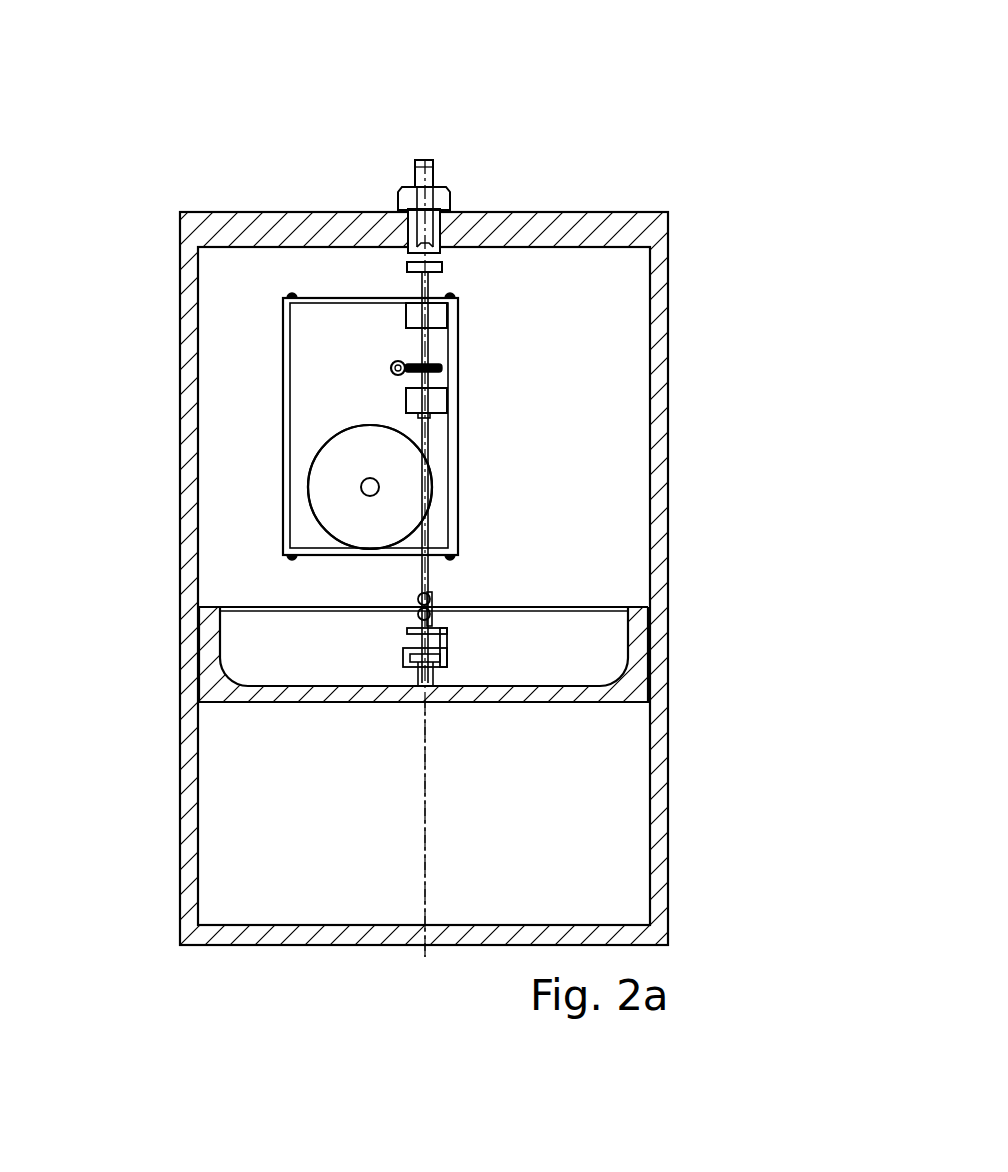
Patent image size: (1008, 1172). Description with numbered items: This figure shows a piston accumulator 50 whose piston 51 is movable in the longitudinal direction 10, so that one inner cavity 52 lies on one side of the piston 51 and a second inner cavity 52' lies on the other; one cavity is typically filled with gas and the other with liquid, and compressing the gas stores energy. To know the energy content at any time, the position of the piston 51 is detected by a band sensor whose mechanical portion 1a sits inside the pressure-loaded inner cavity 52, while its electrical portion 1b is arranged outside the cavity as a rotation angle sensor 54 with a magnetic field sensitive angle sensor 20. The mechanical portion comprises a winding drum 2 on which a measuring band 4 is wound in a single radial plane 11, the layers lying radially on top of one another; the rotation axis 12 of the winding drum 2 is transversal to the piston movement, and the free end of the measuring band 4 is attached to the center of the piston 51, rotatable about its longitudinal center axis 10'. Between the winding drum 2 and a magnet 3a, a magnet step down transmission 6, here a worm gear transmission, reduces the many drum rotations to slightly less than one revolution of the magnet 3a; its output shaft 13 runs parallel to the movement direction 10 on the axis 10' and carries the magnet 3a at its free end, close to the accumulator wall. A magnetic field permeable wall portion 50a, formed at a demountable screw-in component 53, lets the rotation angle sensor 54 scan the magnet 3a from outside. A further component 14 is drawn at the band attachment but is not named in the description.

The piston accumulator 50 is at (668, 222).
The magnetic field permeable wall portion 50a is at (445, 247).
The piston 51 is at (220, 650).
The inner cavity 52 is at (555, 447).
The inner cavity 52' is at (290, 800).
The screw-in component 53 is at (404, 189).
The rotation angle sensor 54 is at (436, 182).
The mechanical portion 1a is at (474, 388).
The electrical portion 1b is at (492, 190).
The magnet 3a is at (443, 271).
The angle sensor 20 is at (410, 248).
The output shaft 13 is at (428, 347).
The magnet step down transmission 6 is at (390, 356).
The winding drum 2 is at (370, 487).
The radial plane 11 is at (370, 487).
The rotation axis 12 is at (364, 496).
The measuring band 4 is at (430, 577).
The clamp 14 is at (449, 655).
The longitudinal direction 10 is at (512, 608).
The longitudinal center axis 10' is at (462, 828).